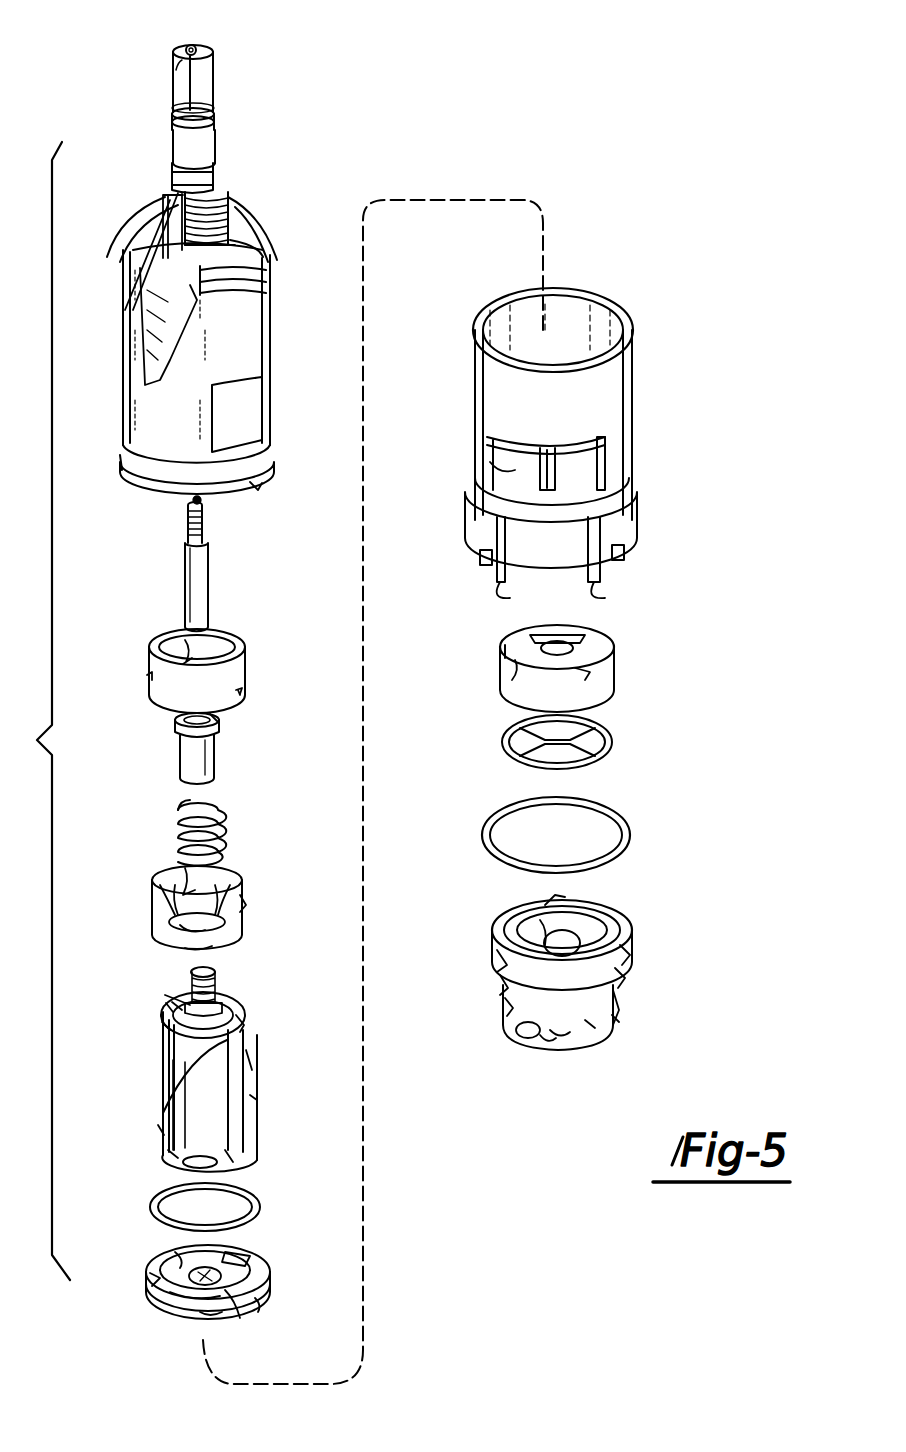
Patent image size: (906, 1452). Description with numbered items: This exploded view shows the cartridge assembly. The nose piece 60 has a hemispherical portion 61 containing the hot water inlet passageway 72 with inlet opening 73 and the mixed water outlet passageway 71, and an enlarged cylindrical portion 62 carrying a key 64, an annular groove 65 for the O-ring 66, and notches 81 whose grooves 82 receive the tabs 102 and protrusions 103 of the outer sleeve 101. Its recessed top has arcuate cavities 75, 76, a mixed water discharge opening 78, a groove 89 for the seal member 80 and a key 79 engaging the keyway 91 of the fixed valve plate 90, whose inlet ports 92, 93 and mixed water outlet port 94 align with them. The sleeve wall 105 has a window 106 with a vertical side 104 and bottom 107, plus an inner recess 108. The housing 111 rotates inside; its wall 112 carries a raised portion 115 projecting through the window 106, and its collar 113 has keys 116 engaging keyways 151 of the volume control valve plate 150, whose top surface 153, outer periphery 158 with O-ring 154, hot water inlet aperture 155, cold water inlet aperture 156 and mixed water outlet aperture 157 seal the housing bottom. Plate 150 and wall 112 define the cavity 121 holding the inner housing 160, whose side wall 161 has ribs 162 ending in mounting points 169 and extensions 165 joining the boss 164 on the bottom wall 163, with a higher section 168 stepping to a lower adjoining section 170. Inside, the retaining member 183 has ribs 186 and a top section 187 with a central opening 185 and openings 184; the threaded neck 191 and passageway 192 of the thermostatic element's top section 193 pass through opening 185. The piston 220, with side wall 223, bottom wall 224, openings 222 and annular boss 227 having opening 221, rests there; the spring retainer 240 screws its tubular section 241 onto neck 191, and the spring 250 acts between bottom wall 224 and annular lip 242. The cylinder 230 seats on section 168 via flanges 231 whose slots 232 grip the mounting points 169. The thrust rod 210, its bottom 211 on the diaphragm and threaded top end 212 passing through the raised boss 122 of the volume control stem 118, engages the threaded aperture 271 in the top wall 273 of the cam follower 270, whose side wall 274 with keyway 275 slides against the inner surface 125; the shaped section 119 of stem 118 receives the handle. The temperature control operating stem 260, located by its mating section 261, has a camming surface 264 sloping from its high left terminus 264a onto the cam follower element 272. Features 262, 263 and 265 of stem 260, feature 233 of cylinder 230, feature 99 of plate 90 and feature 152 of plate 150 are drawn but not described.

The temperature control operating stem 260 is at (230, 40).
The stem end bore 263 is at (198, 18).
The stem shaft 265 is at (205, 82).
The stem shoulder 262 is at (176, 68).
The camming surface 264 is at (212, 130).
The left terminus 264a is at (175, 118).
The mating section 261 is at (176, 150).
The internally threaded aperture 271 is at (172, 173).
The cam follower element 272 is at (215, 172).
The cam follower 270 is at (222, 180).
The top wall 273 is at (165, 198).
The keyway 275 is at (158, 212).
The side wall 274 is at (245, 220).
The inner surface 125 is at (255, 240).
The cavity 121 is at (150, 246).
The raised boss 122 is at (142, 262).
The volume control stem 118 is at (133, 292).
The wall 112 is at (268, 305).
The shaped section 119 is at (246, 286).
The housing 111 is at (272, 358).
The raised portion 115 is at (245, 415).
The keys 116 is at (258, 472).
The collar 113 is at (123, 470).
The top end 212 is at (205, 527).
The temperature control thrust rod 210 is at (200, 562).
The bottom 211 is at (207, 624).
The cylinder 230 is at (245, 640).
The flanges 231 is at (188, 652).
The ring notch 233 is at (148, 680).
The slots 232 is at (240, 690).
The spring retainer and guide element 240 is at (180, 752).
The annular lip 242 is at (216, 722).
The tubular section 241 is at (205, 768).
The spring 250 is at (218, 802).
The piston 220 is at (242, 906).
The bottom wall 224 is at (185, 870).
The openings 222 is at (160, 882).
The opening 221 is at (182, 932).
The side wall 223 is at (243, 903).
The annular boss 227 is at (207, 958).
The passageway 192 is at (207, 972).
The threaded neck 191 is at (224, 988).
The higher section 168 is at (246, 1010).
The mounting points 169 is at (168, 992).
The adjoining section 170 is at (166, 1008).
The top section 187 is at (163, 1030).
The thermostatic control element retaining member 183 is at (174, 1006).
The top section 193 is at (240, 1022).
The openings 184 is at (170, 1050).
The ribs 186 is at (170, 1080).
The central opening 185 is at (248, 1065).
The ribs 162 is at (250, 1120).
The inner housing 160 is at (262, 1140).
The side wall 161 is at (160, 1133).
The bottom wall 163 is at (170, 1155).
The boss 164 is at (185, 1165).
The extensions 165 is at (233, 1165).
The O-ring 154 is at (258, 1205).
The volume control valve plate 150 is at (270, 1270).
The keyways 151 is at (178, 1258).
The cold water inlet aperture 156 is at (245, 1262).
The mixed water outlet aperture 157 is at (148, 1280).
The outer periphery 158 is at (250, 1290).
The top surface 153 is at (240, 1322).
The hot water inlet aperture 155 is at (185, 1322).
The disc bottom 152 is at (210, 1335).
The outer sleeve 101 is at (645, 332).
The wall 105 is at (630, 355).
The vertical side 104 is at (490, 445).
The bottom 107 is at (500, 462).
The window 106 is at (605, 465).
The recess 108 is at (560, 505).
The protrusion 103 is at (618, 540).
The tabs 102 is at (497, 530).
The fixed valve plate 90 is at (612, 668).
The water inlet port 92 is at (575, 635).
The mixed water outlet port 94 is at (580, 648).
The keyway 91 is at (500, 652).
The tab 99 is at (505, 680).
The water inlet port 93 is at (585, 690).
The seal member 80 is at (590, 752).
The O-ring 66 is at (628, 835).
The nose piece 60 is at (522, 1035).
The arcuate cavity 76 is at (545, 920).
The key 64 is at (570, 890).
The groove 89 is at (510, 917).
The mixed water discharge opening 78 is at (590, 912).
The key 79 is at (505, 935).
The cylindrical portion 62 is at (497, 955).
The notches 81 is at (624, 950).
The groove 82 is at (622, 972).
The annular groove 65 is at (620, 1000).
The mixed water outlet passageway 71 is at (590, 1025).
The arcuate cavity 75 is at (618, 1022).
The hemispherical portion 61 is at (525, 1042).
The hot water inlet passageway 72 is at (546, 1048).
The inlet opening 73 is at (556, 1045).